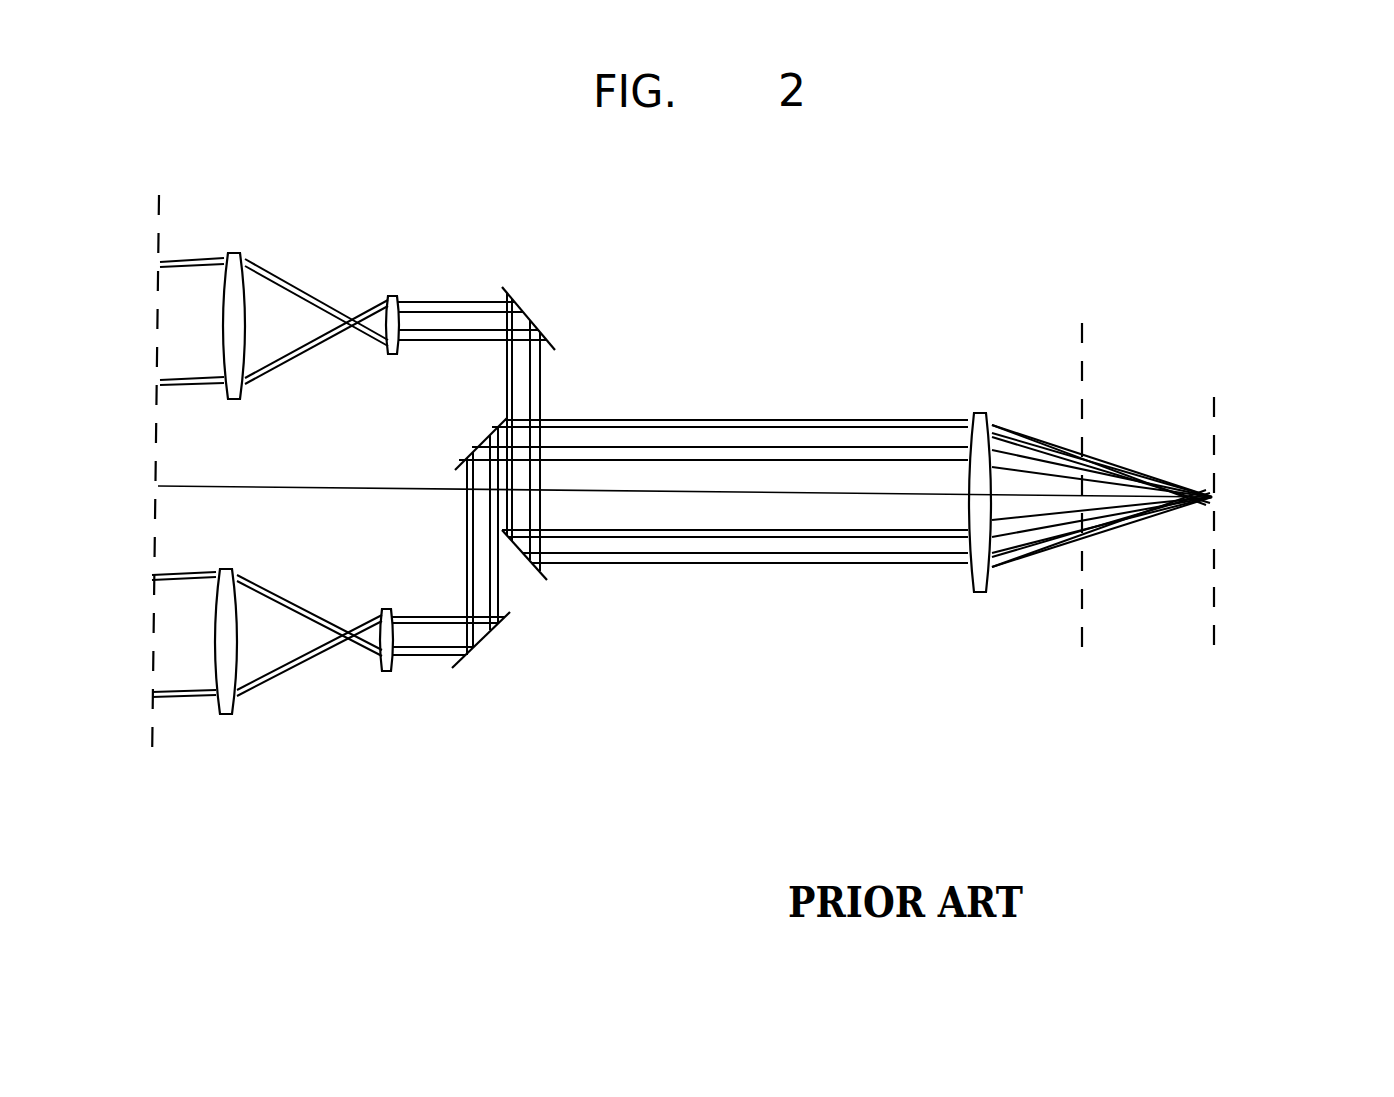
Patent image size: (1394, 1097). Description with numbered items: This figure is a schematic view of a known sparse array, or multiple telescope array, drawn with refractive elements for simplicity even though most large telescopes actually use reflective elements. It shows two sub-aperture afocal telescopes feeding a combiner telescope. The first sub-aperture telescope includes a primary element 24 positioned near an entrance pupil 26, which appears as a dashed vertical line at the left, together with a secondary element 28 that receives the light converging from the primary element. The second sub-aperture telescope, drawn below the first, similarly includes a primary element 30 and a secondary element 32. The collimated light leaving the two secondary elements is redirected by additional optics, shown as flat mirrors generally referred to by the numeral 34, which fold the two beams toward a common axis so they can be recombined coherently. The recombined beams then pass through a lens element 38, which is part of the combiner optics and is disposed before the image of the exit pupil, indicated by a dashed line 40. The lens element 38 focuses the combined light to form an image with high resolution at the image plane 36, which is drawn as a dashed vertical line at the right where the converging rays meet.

The primary element 24 is at (250, 305).
The entrance pupil 26 is at (158, 243).
The secondary element 28 is at (400, 313).
The primary element 30 is at (205, 650).
The secondary element 32 is at (378, 656).
The flat mirrors 34 is at (515, 628).
The image plane 36 is at (1220, 450).
The lens element 38 is at (965, 455).
The aperture plane 40 is at (1080, 355).